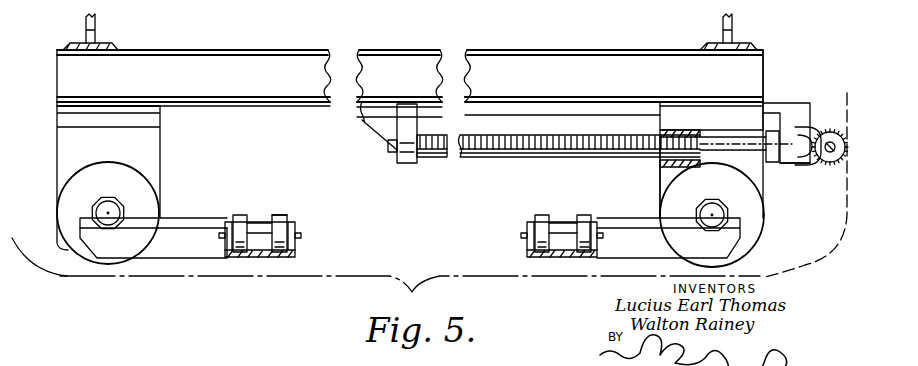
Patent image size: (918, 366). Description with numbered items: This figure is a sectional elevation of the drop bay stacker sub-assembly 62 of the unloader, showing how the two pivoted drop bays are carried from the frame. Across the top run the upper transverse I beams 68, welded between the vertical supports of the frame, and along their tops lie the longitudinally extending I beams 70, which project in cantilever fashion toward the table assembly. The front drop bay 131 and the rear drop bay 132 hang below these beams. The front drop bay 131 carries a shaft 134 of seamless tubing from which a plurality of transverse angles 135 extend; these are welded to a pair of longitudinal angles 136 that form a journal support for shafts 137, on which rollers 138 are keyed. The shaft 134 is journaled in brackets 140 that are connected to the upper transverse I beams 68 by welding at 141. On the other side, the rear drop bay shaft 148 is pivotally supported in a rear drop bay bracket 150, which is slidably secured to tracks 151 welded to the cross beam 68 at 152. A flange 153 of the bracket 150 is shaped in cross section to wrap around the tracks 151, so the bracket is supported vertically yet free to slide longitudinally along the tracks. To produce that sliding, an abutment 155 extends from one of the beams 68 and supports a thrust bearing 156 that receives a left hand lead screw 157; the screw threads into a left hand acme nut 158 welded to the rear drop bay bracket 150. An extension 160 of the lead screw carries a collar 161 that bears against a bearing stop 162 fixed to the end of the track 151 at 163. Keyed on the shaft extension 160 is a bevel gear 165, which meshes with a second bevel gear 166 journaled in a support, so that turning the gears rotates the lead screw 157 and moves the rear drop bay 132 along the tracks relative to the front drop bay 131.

The drop bay stacker sub-assembly 62 is at (110, 286).
The upper transverse I beams 68 is at (410, 76).
The longitudinally extending I beams 70 is at (94, 33).
The front drop bay 131 is at (190, 220).
The rear drop bay 132 is at (653, 245).
The shaft 134 is at (126, 209).
The transverse angles 135 is at (167, 244).
The longitudinal angles 136 is at (277, 260).
The shafts 137 is at (253, 228).
The rollers 138 is at (293, 219).
The brackets 140 is at (147, 146).
The weld connection 141 is at (82, 106).
The rear drop bay shaft 148 is at (718, 215).
The rear drop bay bracket 150 is at (687, 183).
The tracks 151 is at (567, 112).
The weld connection 152 is at (540, 102).
The flange 153 is at (711, 134).
The abutment 155 is at (403, 126).
The thrust bearing 156 is at (418, 155).
The left hand lead screw 157 is at (500, 157).
The left hand acme nut 158 is at (660, 128).
The shaft extension 160 is at (766, 180).
The collar 161 is at (773, 164).
The bearing stop 162 is at (814, 134).
The fixing point 163 is at (787, 128).
The bevel gear 165 is at (772, 146).
The bevel gear 166 is at (803, 248).